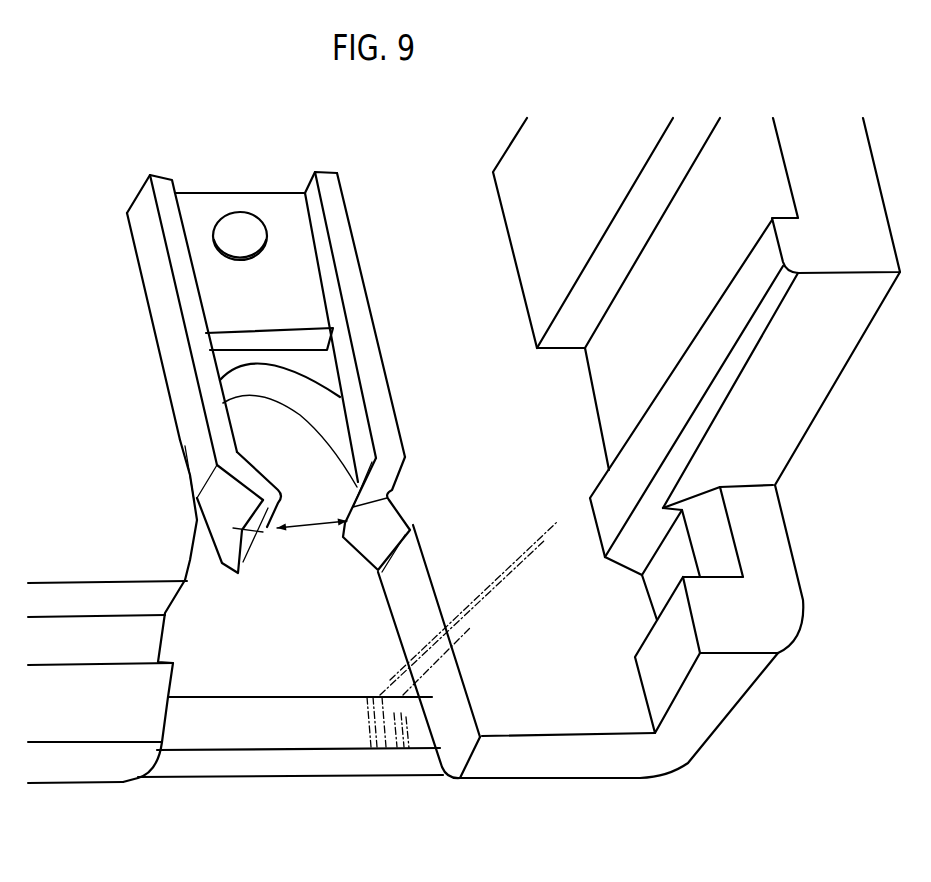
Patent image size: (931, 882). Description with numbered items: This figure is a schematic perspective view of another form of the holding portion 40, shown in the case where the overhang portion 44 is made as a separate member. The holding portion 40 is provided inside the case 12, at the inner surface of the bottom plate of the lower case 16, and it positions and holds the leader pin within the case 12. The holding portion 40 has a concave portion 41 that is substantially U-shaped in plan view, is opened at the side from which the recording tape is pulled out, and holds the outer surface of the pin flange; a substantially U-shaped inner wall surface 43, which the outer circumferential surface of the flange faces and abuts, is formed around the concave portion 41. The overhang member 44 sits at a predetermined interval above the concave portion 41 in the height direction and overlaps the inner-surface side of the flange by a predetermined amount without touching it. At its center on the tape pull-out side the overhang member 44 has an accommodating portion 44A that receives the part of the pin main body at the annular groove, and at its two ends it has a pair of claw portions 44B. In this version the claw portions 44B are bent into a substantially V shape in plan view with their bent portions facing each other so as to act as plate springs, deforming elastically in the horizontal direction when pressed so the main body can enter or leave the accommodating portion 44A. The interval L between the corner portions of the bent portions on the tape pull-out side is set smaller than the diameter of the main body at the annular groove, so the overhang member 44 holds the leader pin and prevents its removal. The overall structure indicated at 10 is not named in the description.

The connector housing 10 is at (832, 483).
The case 12 is at (657, 777).
The lower case 16 is at (73, 787).
The holding portion 40 is at (344, 777).
The concave portion 41 is at (300, 645).
The inner wall surface 43 is at (273, 390).
The overhang portion 44 is at (285, 247).
The accommodating portion 44A is at (352, 368).
The claw portions 44B is at (378, 500).
The interval L is at (331, 522).